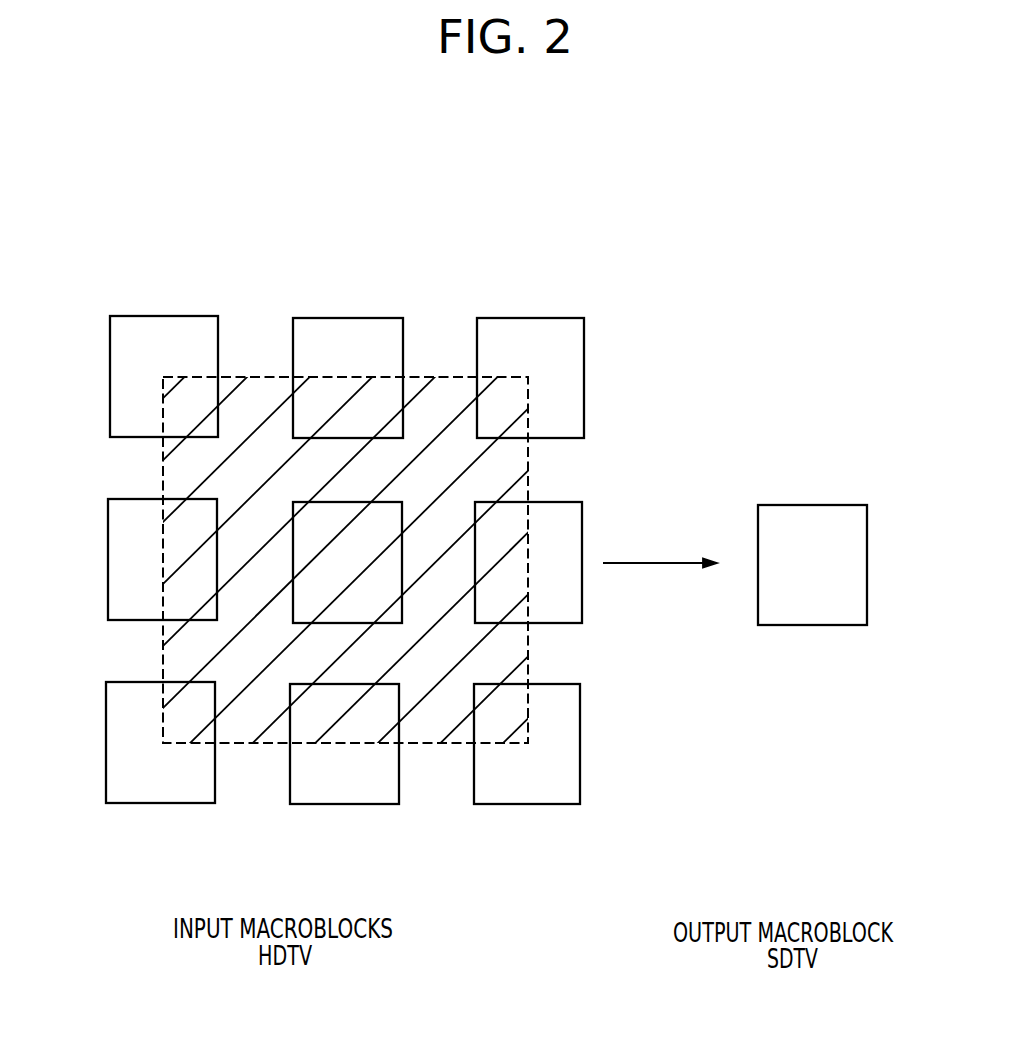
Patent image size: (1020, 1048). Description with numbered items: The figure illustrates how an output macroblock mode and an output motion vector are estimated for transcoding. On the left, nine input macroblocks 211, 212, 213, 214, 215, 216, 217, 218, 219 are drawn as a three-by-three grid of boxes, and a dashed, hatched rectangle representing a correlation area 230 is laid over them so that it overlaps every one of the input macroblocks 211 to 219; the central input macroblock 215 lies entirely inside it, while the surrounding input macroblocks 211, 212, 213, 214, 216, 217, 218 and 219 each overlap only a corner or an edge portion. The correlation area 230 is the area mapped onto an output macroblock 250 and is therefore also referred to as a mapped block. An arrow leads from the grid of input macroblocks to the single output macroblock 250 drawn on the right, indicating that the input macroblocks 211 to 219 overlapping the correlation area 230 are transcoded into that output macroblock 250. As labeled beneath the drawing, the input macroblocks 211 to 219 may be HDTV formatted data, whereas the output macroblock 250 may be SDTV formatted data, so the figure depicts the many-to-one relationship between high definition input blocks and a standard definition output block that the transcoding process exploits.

The input macroblock 211 is at (162, 316).
The input macroblock 212 is at (347, 318).
The input macroblock 213 is at (528, 318).
The input macroblock 214 is at (108, 556).
The input macroblock 215 is at (358, 502).
The input macroblock 216 is at (582, 537).
The input macroblock 217 is at (159, 803).
The input macroblock 218 is at (342, 804).
The input macroblock 219 is at (523, 804).
The correlation area 230 is at (443, 376).
The output macroblock 250 is at (812, 505).